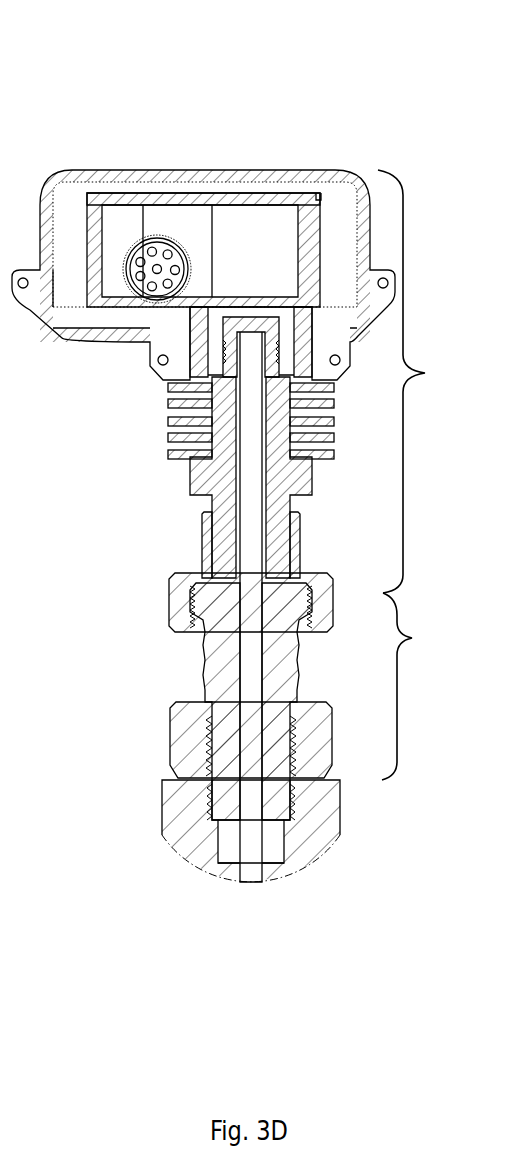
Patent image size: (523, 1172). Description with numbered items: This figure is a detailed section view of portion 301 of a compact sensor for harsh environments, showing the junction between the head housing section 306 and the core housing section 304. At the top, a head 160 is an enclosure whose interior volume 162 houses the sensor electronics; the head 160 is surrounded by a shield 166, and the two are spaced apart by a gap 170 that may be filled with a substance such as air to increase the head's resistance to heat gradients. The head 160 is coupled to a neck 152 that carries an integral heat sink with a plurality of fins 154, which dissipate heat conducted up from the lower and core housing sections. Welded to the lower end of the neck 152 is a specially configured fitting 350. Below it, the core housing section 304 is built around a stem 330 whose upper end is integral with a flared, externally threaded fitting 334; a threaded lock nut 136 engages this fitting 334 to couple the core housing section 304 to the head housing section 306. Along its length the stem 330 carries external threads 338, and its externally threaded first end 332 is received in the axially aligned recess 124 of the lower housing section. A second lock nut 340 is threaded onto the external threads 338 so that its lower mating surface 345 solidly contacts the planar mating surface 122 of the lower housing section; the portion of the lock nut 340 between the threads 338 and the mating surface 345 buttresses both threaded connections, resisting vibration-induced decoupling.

The portion 301 is at (198, 75).
The shield 166 is at (332, 170).
The gap 170 is at (62, 212).
The interior volume 162 is at (245, 232).
The head 160 is at (314, 195).
The neck 152 is at (190, 481).
The fins 154 is at (168, 437).
The fitting 350 is at (202, 546).
The threaded lock nut 136 is at (169, 591).
The fitting 334 is at (184, 614).
The stem 330 is at (297, 662).
The lock nut 340 is at (172, 706).
The external threads 338 is at (306, 725).
The planar mating surface 122 is at (156, 770).
The axially aligned recess 124 is at (202, 811).
The lower mating surface 345 is at (325, 791).
The first end 332 is at (279, 805).
The head housing section 306 is at (419, 381).
The core housing section 304 is at (416, 686).